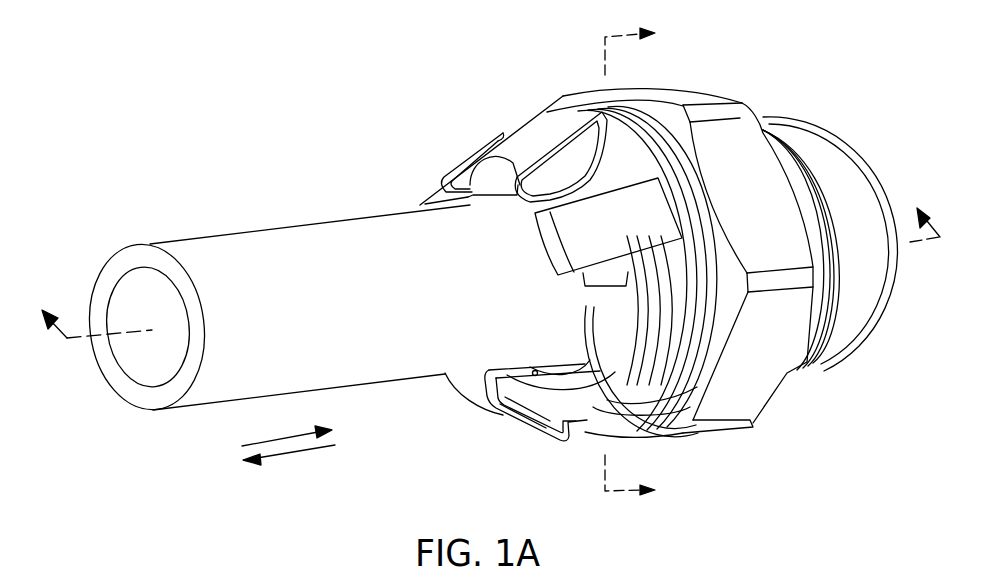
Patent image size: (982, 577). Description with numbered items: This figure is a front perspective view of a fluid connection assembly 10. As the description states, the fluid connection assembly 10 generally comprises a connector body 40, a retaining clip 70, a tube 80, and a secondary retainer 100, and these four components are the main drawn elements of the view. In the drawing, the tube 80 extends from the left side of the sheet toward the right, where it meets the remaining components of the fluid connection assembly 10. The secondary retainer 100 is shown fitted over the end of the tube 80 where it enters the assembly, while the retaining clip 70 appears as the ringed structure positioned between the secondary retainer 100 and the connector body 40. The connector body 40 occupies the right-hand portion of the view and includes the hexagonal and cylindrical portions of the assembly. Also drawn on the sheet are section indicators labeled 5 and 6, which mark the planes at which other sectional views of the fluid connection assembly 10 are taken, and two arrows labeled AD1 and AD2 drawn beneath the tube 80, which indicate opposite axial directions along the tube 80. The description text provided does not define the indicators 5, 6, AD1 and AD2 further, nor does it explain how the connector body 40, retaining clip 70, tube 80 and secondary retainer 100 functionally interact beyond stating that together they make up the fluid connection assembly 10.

The fluid connection assembly 10 is at (101, 144).
The tube 80 is at (222, 272).
The secondary retainer 100 is at (534, 143).
The retaining clip 70 is at (640, 164).
The connector body 40 is at (757, 145).
The section line 5- 5 is at (481, 258).
The section line 6- 6 is at (640, 259).
The first axial direction AD1 is at (290, 437).
The second axial direction AD2 is at (290, 455).